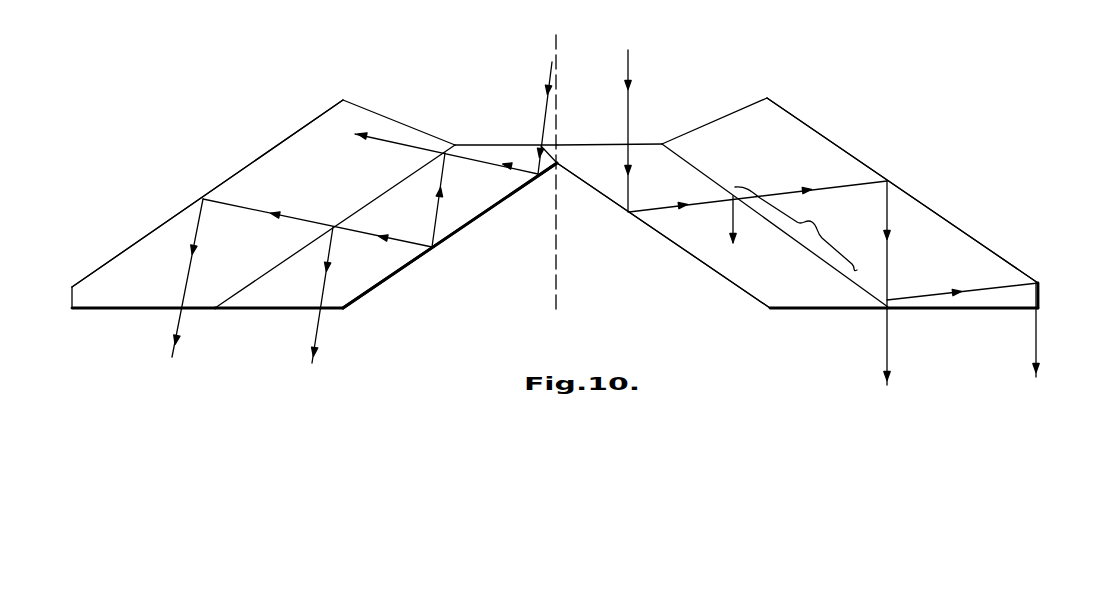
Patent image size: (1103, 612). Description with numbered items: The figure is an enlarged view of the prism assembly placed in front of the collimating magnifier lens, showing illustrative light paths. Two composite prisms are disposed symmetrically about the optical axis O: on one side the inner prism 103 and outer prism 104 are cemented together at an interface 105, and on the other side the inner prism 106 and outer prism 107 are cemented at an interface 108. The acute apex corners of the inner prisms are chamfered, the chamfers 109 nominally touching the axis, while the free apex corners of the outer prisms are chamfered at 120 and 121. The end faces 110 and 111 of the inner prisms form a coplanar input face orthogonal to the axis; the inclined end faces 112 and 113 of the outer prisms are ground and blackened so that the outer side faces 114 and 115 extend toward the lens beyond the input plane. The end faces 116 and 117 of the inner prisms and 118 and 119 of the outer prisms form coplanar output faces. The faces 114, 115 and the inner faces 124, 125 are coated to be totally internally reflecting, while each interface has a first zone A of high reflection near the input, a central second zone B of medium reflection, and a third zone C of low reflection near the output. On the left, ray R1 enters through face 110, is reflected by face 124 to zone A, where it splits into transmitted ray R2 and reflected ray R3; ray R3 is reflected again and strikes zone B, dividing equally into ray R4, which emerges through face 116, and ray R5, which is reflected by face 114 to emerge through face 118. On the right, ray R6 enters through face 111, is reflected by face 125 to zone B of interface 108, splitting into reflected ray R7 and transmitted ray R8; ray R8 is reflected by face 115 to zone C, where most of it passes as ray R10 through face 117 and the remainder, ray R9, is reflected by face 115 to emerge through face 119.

The inner prism 103 is at (398, 252).
The outer prism 104 is at (134, 248).
The interface 105 is at (378, 196).
The inner prism 106 is at (747, 276).
The outer prism 107 is at (814, 132).
The interface 108 is at (793, 240).
The chamfers 109 is at (560, 167).
The end face 110 is at (503, 145).
The end face 111 is at (592, 145).
The end face 112 is at (401, 122).
The end face 113 is at (738, 110).
The outer side face 114 is at (249, 166).
The outer side face 115 is at (936, 212).
The end face 116 is at (248, 314).
The end face 117 is at (810, 312).
The end face 118 is at (135, 311).
The end face 119 is at (963, 310).
The chamfer 120 is at (70, 300).
The chamfer 121 is at (1043, 291).
The inner face 124 is at (469, 221).
The inner face 125 is at (678, 247).
The ray R1 is at (530, 118).
The ray R2 is at (430, 149).
The ray R3 is at (451, 200).
The ray R4 is at (332, 295).
The ray R5 is at (302, 268).
The ray R6 is at (645, 131).
The ray R7 is at (717, 221).
The ray R8 is at (758, 187).
The ray R9 is at (963, 318).
The ray R10 is at (865, 283).
The first zone A is at (427, 148).
The second zone B is at (270, 257).
The third zone C is at (254, 270).
The optical axis O is at (555, 176).